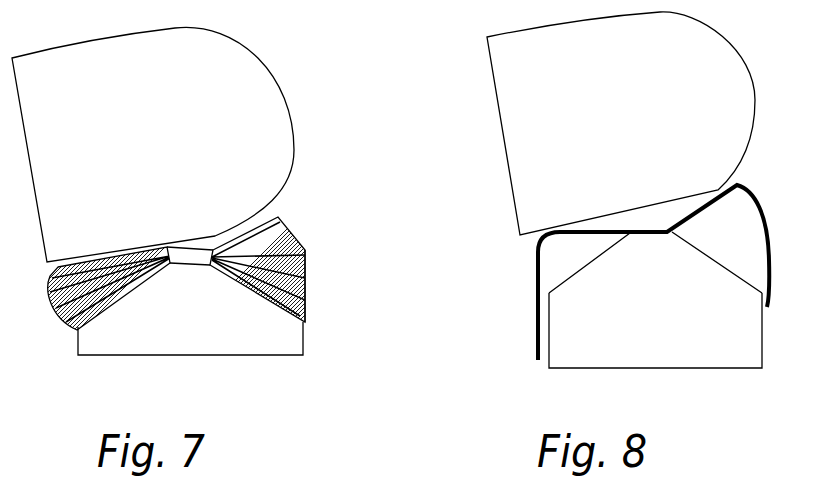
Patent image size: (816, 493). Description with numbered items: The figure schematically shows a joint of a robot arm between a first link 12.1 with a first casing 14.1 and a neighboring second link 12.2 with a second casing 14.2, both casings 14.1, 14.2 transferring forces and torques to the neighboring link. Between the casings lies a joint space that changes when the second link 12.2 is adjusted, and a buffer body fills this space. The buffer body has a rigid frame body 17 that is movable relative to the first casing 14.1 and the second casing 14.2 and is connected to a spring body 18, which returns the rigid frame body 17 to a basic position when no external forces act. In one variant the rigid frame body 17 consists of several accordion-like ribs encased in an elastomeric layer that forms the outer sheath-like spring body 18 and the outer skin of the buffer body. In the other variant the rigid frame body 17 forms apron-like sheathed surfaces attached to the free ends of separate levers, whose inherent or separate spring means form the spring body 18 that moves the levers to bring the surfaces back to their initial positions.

In FIG. 7, the first link 12.1 is at (281, 350).
In FIG. 8, the first link 12.1 is at (631, 330).
In FIG. 7, the first casing 14.1 is at (260, 342).
In FIG. 8, the first casing 14.1 is at (577, 345).
In FIG. 7, the second link 12.2 is at (244, 131).
In FIG. 8, the second link 12.2 is at (601, 123).
In FIG. 7, the second casing 14.2 is at (230, 72).
In FIG. 8, the second casing 14.2 is at (518, 97).
In FIG. 7, the rigid frame body 17 is at (305, 250).
In FIG. 8, the rigid frame body 17 is at (533, 280).
In FIG. 7, the spring body 18 is at (307, 287).
In FIG. 8, the spring body 18 is at (563, 227).